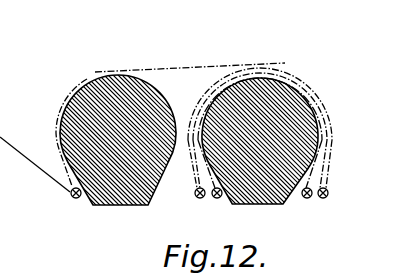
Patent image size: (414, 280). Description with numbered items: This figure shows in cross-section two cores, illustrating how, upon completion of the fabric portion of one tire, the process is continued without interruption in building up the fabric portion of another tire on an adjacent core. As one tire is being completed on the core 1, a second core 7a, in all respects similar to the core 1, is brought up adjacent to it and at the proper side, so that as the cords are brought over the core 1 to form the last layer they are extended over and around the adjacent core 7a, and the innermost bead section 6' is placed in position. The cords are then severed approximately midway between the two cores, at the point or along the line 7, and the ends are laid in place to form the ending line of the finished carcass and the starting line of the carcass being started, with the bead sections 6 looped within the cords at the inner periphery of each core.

The core 1 is at (258, 87).
The core 7a is at (122, 90).
The line of severing 7 is at (183, 66).
The bead wire 6 is at (214, 209).
The bead wire 6' is at (335, 200).